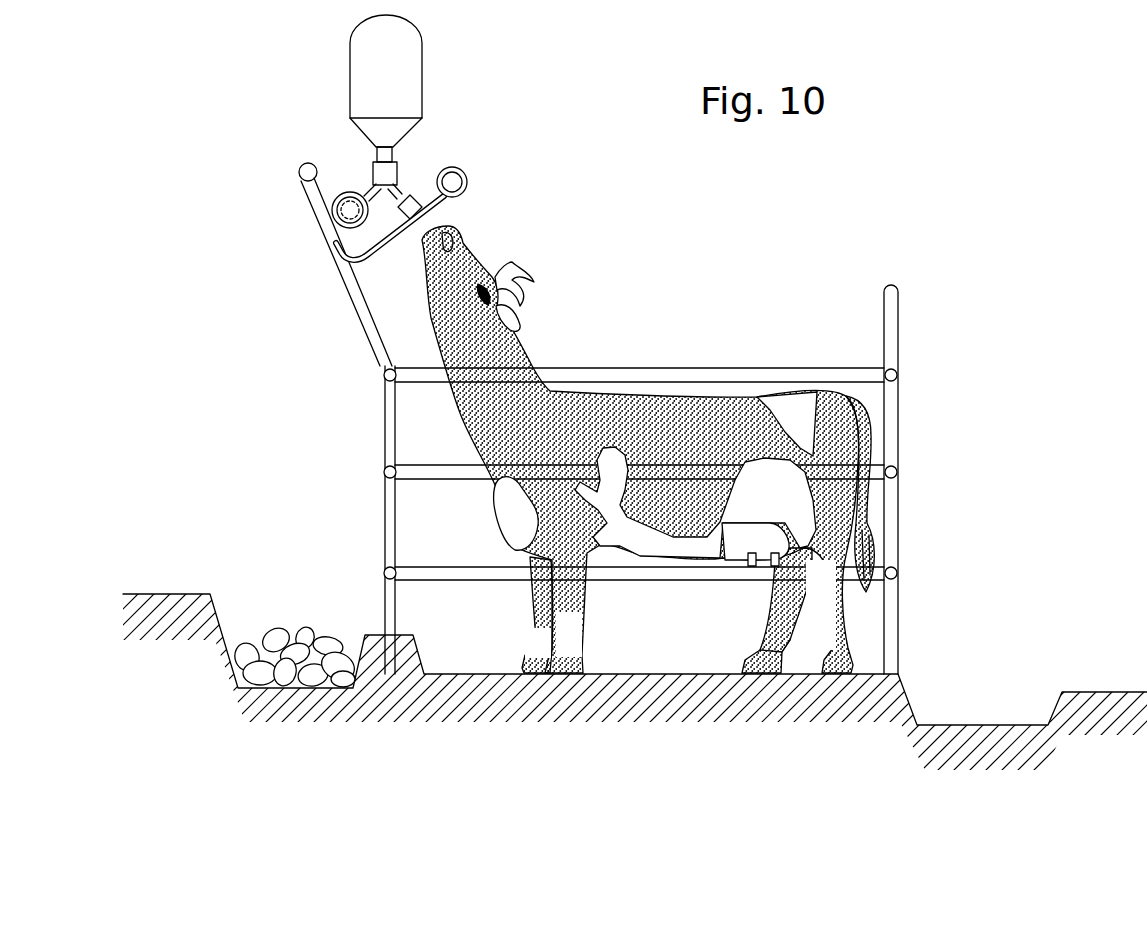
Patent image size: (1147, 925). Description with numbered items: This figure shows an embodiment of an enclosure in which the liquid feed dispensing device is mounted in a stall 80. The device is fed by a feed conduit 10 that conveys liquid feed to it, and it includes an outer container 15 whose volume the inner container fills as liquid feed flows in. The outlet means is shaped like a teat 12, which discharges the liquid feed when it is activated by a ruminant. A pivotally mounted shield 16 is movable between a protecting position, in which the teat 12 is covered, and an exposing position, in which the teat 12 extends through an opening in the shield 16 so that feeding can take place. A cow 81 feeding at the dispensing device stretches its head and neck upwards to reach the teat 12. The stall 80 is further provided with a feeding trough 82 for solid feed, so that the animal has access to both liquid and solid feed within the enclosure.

The feed conduit 10 is at (332, 212).
The teat 12 is at (432, 228).
The outer container 15 is at (425, 72).
The shield 16 is at (366, 273).
The stall 80 is at (412, 518).
The cow 81 is at (670, 396).
The feeding trough 82 is at (222, 628).